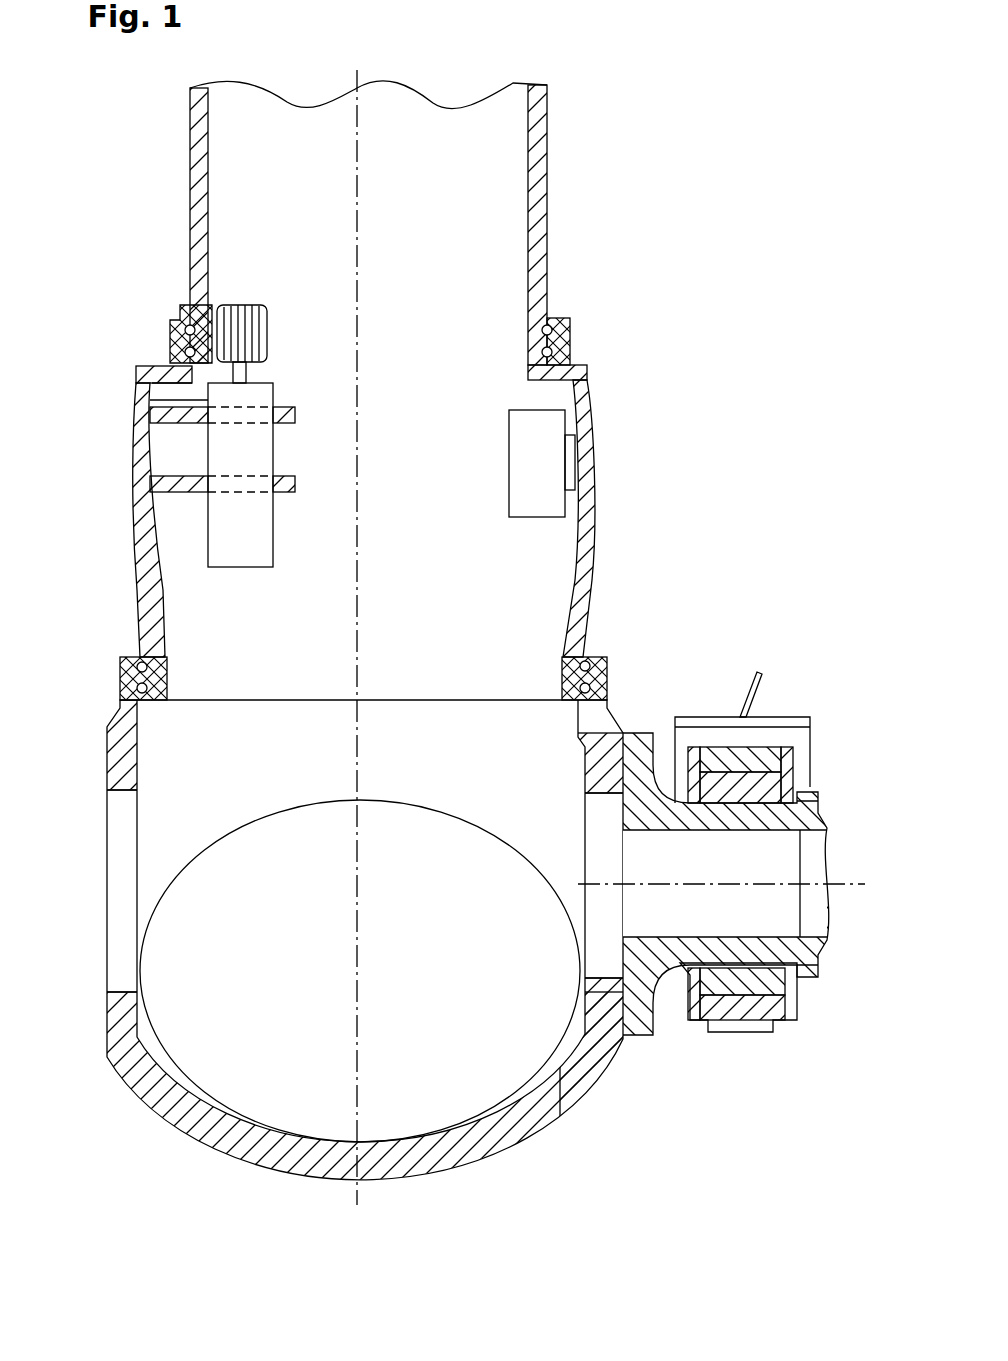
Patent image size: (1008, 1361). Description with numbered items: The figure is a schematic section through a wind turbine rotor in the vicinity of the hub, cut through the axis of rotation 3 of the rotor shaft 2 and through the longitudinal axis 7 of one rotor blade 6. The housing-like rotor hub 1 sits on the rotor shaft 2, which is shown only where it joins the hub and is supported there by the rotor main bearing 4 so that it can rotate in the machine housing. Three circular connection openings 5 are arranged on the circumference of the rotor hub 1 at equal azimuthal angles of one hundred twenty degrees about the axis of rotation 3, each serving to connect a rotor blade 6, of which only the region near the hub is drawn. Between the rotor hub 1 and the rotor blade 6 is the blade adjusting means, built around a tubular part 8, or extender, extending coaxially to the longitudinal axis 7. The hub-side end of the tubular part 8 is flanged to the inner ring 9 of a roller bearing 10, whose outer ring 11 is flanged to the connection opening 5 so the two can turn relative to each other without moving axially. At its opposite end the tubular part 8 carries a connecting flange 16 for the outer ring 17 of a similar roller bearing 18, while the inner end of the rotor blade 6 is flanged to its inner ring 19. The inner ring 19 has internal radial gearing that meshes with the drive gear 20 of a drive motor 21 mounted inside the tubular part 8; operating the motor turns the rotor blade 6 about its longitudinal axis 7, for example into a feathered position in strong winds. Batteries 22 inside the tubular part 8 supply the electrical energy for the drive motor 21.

The rotor hub 1 is at (270, 1268).
The rotor shaft 2 is at (744, 856).
The axis of rotation 3 is at (850, 887).
The rotor main bearing 4 is at (780, 757).
The connection opening 5 is at (450, 705).
The rotor blade 6 is at (540, 272).
The longitudinal axis 7 is at (360, 262).
The tubular part 8 is at (138, 452).
The inner ring 9 is at (157, 680).
The roller bearing 10 is at (340, 902).
The outer ring 11 is at (130, 677).
The connecting flange 16 is at (183, 378).
The outer ring 17 is at (168, 330).
The roller bearing 18 is at (130, 352).
The inner ring 19 is at (183, 308).
The drive gear 20 is at (255, 308).
The drive motor 21 is at (262, 535).
The batteries 22 is at (525, 462).